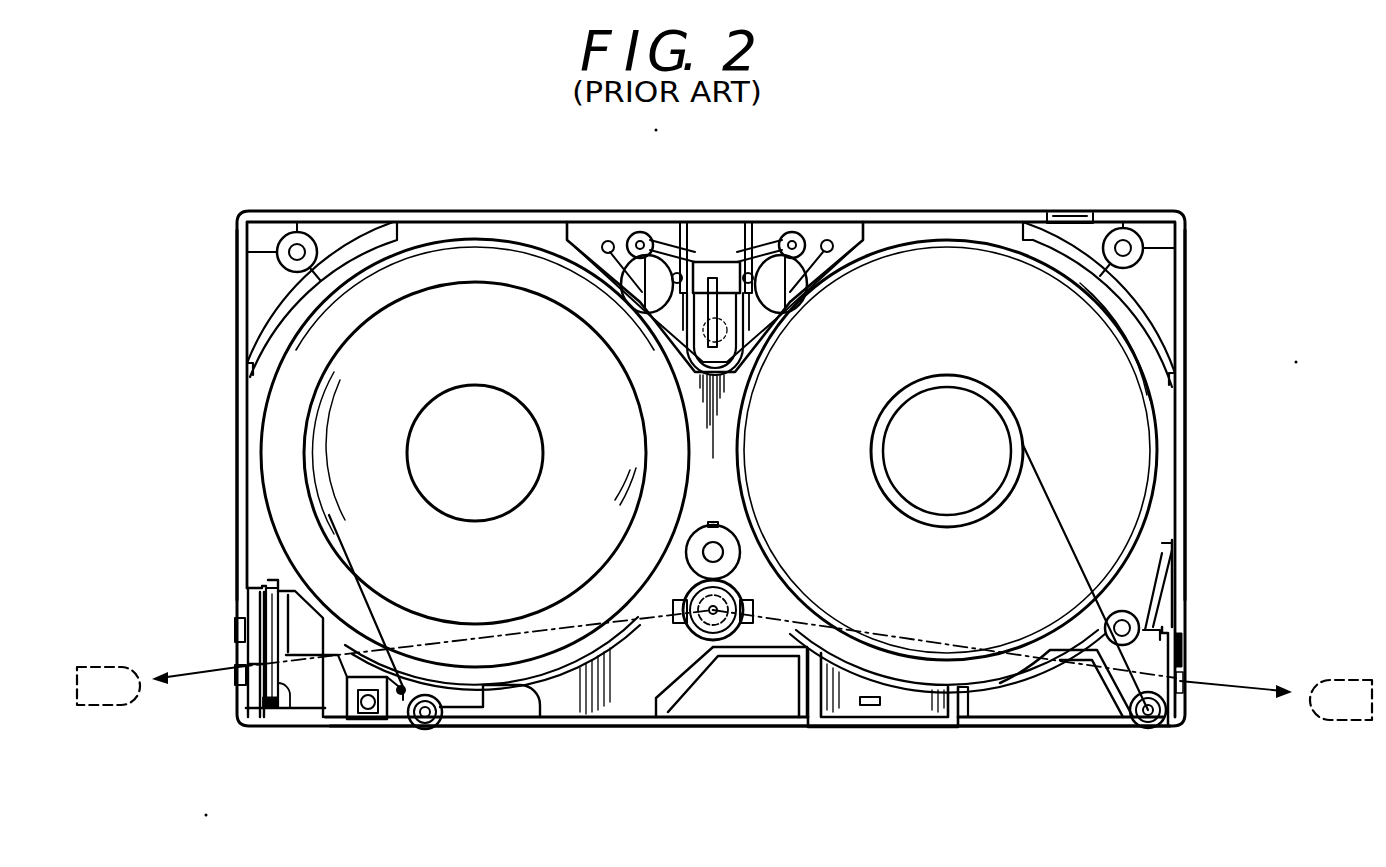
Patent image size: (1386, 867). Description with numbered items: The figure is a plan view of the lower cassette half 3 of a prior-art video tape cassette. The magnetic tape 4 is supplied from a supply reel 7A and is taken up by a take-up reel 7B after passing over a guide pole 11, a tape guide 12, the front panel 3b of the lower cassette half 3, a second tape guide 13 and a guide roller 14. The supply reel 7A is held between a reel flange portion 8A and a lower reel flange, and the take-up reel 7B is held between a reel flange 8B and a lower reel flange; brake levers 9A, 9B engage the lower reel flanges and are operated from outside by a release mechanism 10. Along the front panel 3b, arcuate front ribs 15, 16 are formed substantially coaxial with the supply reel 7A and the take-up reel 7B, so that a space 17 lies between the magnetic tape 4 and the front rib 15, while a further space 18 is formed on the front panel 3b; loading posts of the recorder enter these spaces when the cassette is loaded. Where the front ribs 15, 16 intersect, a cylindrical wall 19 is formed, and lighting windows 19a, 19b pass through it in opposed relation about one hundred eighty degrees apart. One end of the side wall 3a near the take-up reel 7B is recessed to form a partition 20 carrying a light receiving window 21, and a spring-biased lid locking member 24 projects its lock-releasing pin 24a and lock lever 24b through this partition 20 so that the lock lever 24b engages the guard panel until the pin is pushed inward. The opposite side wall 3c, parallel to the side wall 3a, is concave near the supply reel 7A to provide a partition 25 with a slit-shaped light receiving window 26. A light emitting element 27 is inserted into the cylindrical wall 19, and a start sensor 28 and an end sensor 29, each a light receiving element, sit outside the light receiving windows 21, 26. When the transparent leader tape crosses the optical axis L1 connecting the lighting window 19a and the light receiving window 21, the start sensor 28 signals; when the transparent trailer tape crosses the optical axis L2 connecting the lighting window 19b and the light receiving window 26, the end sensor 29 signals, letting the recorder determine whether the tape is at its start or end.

The lower cassette half 3 is at (1025, 211).
The side wall 3a is at (237, 292).
The front panel 3b is at (905, 732).
The side wall 3c is at (1185, 270).
The magnetic tape 4 is at (800, 738).
The supply reel 7A is at (949, 376).
The take-up reel 7B is at (471, 376).
The reel flange portion 8A is at (912, 240).
The reel flange 8B is at (432, 240).
The brake lever 9A is at (792, 232).
The brake lever 9B is at (640, 232).
The release mechanism 10 is at (706, 262).
The guide pole 11 is at (1150, 617).
The tape guide 12 is at (1150, 720).
The tape guide 13 is at (430, 727).
The guide roller 14 is at (378, 727).
The front rib 15 is at (1005, 690).
The front rib 16 is at (577, 680).
The space 17 is at (1050, 702).
The space 18 is at (722, 685).
The cylindrical wall 19 is at (740, 585).
The lighting window 19a is at (680, 630).
The lighting window 19b is at (748, 605).
The partition 20 is at (255, 722).
The light receiving window 21 is at (240, 680).
The lid locking member 24 is at (288, 692).
The lock-releasing pin 24a is at (238, 632).
The lock lever 24b is at (238, 668).
The partition 25 is at (1180, 717).
The light receiving window 26 is at (1188, 668).
The light emitting element 27 is at (720, 628).
The start sensor 28 is at (118, 705).
The end sensor 29 is at (1330, 722).
The optical axis L1 is at (463, 640).
The optical axis L2 is at (905, 640).